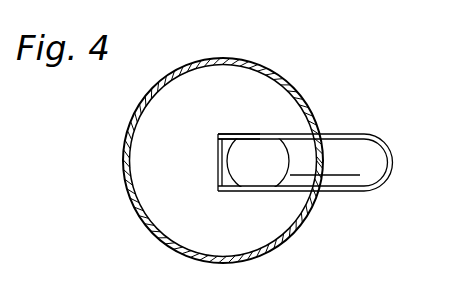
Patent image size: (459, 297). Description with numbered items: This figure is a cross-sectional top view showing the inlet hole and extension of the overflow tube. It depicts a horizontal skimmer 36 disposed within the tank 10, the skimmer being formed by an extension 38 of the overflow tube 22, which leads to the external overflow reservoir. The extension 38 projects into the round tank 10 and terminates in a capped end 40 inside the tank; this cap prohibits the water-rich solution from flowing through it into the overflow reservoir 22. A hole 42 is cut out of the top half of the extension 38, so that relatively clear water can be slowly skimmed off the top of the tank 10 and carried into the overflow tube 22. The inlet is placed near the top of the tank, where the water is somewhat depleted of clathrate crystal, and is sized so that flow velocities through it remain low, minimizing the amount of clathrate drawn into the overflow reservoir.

The tank 10 is at (283, 67).
The overflow tube 22 is at (363, 135).
The horizontal skimmer 36 is at (287, 133).
The extension 38 is at (228, 133).
The capped end 40 is at (218, 162).
The hole 42 is at (258, 192).